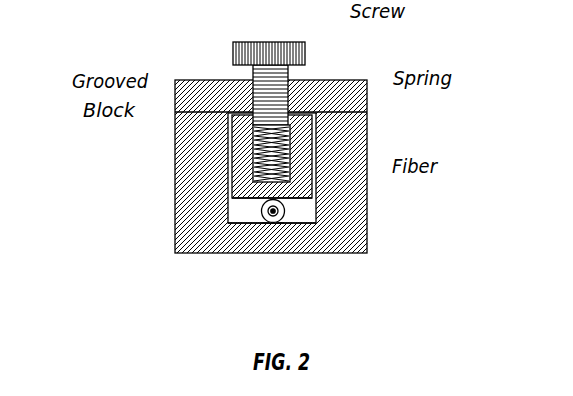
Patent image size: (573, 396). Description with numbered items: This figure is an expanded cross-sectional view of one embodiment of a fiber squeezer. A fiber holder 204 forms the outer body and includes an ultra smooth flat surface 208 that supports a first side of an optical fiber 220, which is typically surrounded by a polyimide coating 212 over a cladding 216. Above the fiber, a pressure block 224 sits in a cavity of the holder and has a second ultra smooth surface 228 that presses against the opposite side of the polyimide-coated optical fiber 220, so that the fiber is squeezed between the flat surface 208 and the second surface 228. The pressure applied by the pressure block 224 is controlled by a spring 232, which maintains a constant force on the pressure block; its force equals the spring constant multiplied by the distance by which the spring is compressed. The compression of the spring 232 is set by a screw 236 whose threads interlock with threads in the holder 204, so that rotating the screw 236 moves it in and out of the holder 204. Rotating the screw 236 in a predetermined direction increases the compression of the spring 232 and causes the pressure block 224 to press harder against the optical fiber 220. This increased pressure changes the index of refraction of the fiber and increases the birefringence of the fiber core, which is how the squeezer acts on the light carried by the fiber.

The fiber holder 204 is at (148, 203).
The ultra smooth flat surface 208 is at (234, 205).
The polyimide coating 212 is at (255, 267).
The cladding 216 is at (309, 253).
The optical fiber 220 is at (346, 203).
The pressure block 224 is at (202, 156).
The second ultra smooth surface 228 is at (222, 237).
The spring 232 is at (346, 138).
The screw 236 is at (312, 76).